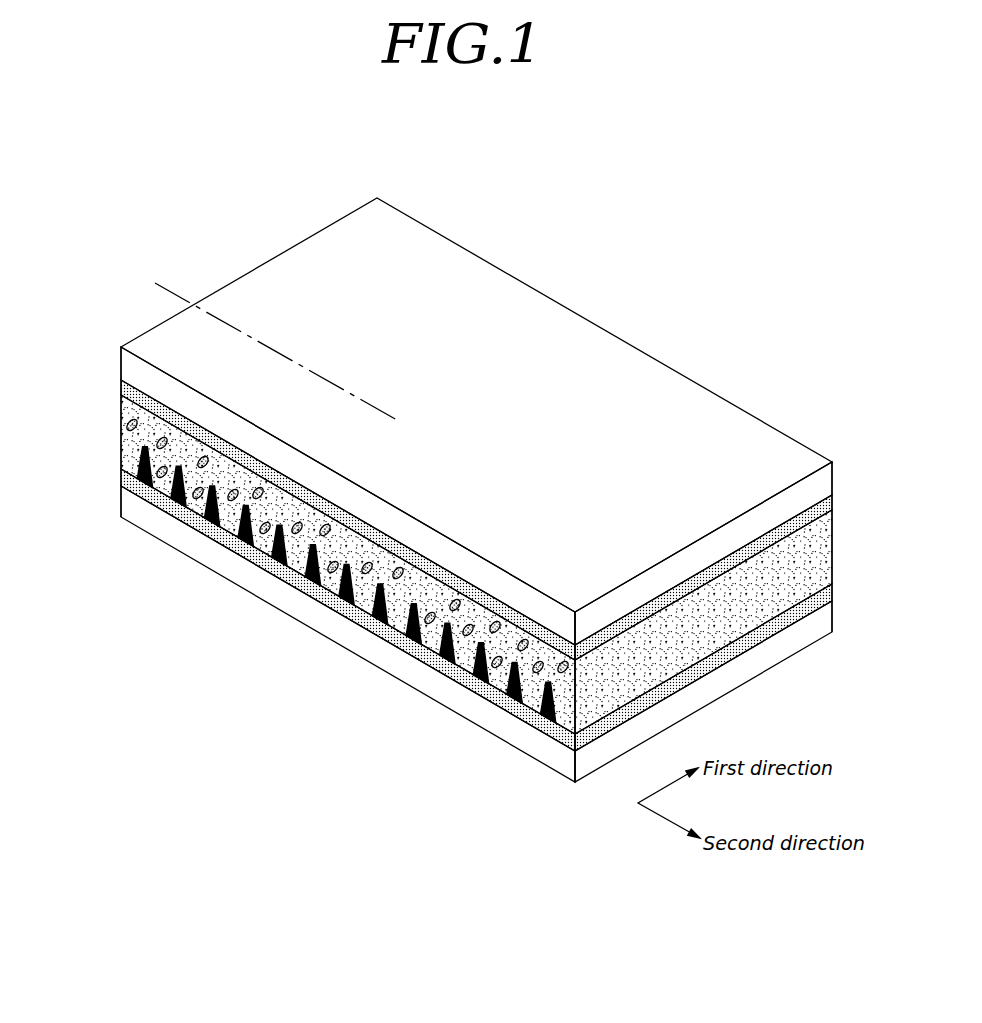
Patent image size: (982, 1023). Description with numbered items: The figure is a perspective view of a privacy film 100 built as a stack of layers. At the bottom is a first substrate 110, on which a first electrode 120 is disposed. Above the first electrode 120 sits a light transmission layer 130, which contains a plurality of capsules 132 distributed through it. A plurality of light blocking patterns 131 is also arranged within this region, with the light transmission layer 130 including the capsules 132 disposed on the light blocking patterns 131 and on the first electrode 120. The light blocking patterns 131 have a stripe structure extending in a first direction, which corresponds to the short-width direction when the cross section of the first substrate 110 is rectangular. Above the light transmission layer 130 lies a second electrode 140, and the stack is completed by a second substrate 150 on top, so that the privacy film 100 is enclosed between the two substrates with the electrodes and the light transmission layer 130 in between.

The privacy film 100 is at (664, 300).
The first substrate 110 is at (298, 608).
The first electrode 120 is at (353, 613).
The light transmission layer 130 is at (127, 440).
The light blocking patterns 131 is at (140, 455).
The capsules 132 is at (198, 498).
The second electrode 140 is at (127, 393).
The second substrate 150 is at (127, 365).